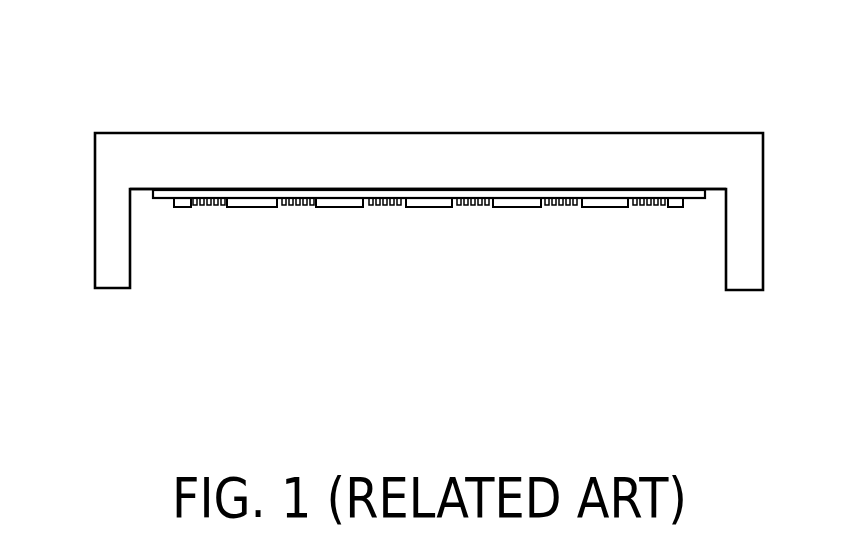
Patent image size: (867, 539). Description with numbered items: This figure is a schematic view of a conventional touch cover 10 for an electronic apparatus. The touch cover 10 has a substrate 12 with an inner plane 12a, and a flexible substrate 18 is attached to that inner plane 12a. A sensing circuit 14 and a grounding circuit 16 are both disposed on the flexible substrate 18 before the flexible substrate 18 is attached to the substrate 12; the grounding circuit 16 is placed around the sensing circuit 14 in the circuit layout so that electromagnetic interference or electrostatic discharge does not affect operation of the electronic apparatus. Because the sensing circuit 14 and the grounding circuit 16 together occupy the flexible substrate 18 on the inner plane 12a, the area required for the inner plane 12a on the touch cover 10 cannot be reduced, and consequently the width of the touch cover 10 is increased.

The touch cover 10 is at (743, 83).
The substrate 12 is at (654, 155).
The inner plane 12a is at (142, 190).
The sensing circuit 14 is at (250, 209).
The grounding circuit 16 is at (178, 209).
The flexible substrate 18 is at (342, 193).